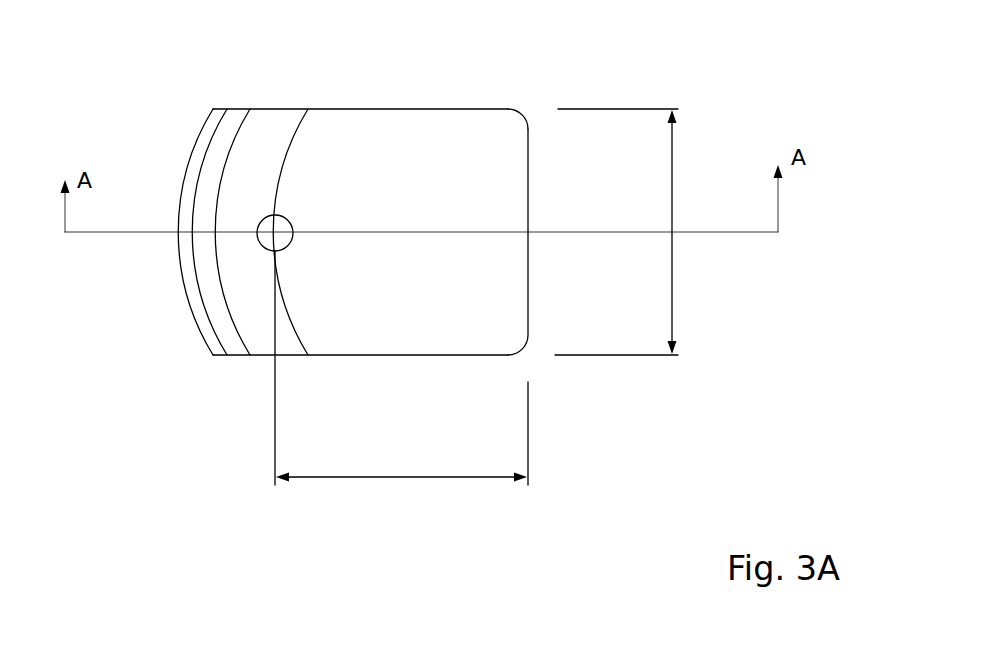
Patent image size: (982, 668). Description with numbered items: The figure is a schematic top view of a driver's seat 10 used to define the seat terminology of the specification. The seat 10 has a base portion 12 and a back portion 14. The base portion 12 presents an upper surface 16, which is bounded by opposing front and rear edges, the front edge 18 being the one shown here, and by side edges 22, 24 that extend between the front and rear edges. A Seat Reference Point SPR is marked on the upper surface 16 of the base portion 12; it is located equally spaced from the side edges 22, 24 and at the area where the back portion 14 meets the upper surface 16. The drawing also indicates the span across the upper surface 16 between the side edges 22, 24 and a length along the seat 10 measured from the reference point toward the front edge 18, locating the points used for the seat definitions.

The seat 10 is at (502, 80).
The base portion 12 is at (498, 270).
The back portion 14 is at (263, 313).
The upper surface 16 is at (436, 300).
The front edge 18 is at (541, 314).
The side edge 22 is at (365, 100).
The side edge 24 is at (385, 368).
The Seat Reference Point SPR is at (290, 245).